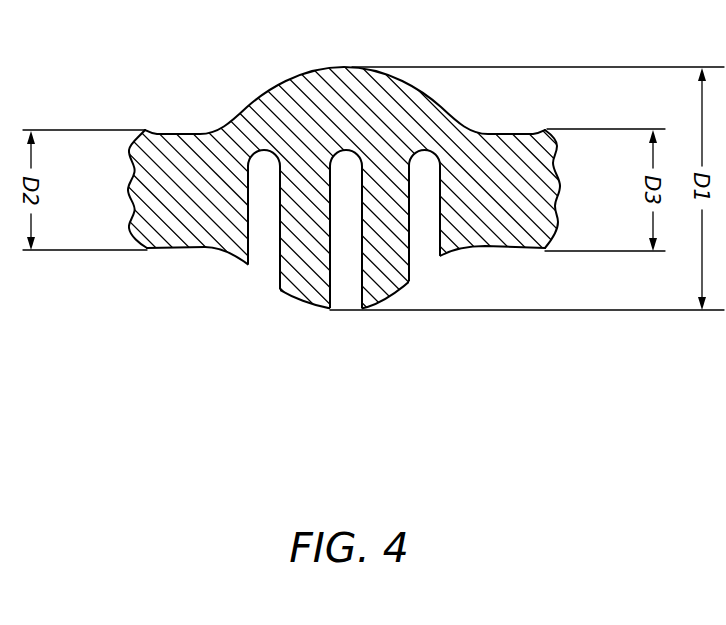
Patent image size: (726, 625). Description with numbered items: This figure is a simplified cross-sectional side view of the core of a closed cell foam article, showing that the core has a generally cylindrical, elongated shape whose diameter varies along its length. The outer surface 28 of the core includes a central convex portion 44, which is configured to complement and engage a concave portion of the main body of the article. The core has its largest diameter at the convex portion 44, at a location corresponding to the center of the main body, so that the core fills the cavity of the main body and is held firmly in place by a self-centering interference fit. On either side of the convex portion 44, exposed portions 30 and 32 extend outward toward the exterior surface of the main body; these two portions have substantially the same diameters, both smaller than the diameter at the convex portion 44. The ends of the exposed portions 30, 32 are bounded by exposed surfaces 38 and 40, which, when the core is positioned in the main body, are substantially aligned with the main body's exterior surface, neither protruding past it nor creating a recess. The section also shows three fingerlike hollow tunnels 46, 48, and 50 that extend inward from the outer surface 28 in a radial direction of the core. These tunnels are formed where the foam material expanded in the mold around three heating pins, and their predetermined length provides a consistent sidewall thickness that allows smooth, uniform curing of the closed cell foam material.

The outer surface 28 is at (287, 296).
The exposed portion 30 is at (129, 227).
The exposed portion 32 is at (558, 227).
The exposed surface 38 is at (133, 172).
The exposed surface 40 is at (558, 157).
The convex portion 44 is at (352, 67).
The hollow tunnel 46 is at (261, 254).
The hollow tunnel 48 is at (343, 283).
The hollow tunnel 50 is at (419, 256).